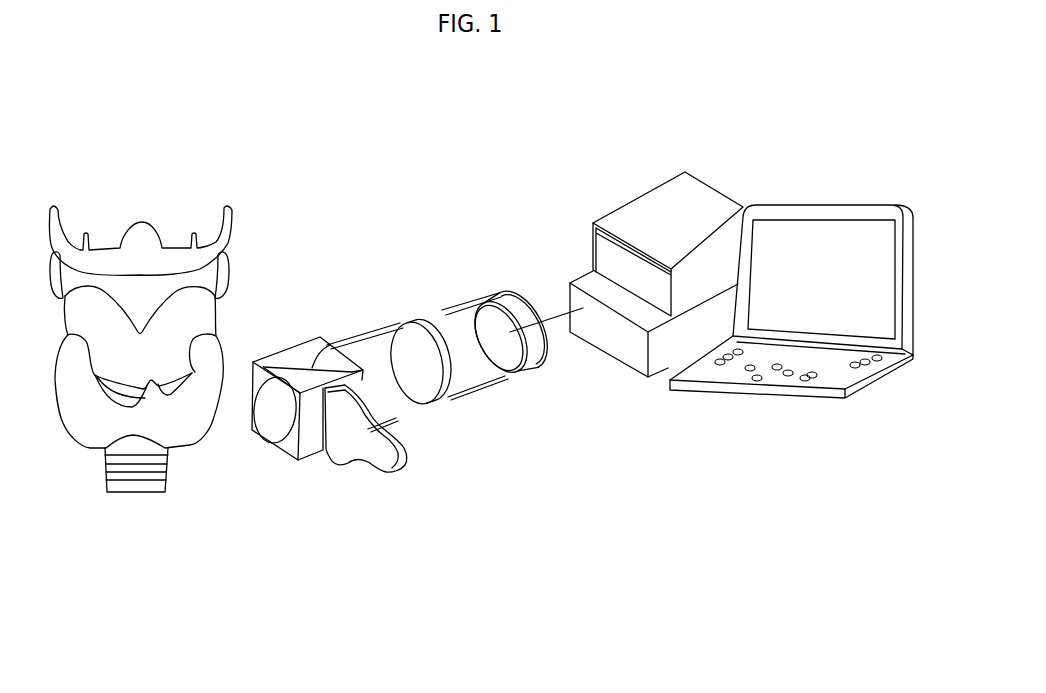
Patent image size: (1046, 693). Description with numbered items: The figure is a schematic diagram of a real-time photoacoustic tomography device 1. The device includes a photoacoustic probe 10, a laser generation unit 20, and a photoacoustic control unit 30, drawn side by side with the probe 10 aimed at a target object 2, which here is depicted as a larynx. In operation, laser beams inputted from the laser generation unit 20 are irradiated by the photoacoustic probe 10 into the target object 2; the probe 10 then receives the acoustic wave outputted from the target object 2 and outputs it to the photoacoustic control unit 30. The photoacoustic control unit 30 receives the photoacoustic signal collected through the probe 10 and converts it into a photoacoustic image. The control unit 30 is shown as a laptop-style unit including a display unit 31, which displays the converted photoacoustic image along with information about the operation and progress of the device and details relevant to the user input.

The real-time photoacoustic tomography device 1 is at (524, 226).
The target object 2 is at (186, 320).
The photoacoustic probe 10 is at (375, 343).
The laser generation unit 20 is at (667, 210).
The photoacoustic control unit 30 is at (812, 257).
The display unit 31 is at (870, 280).